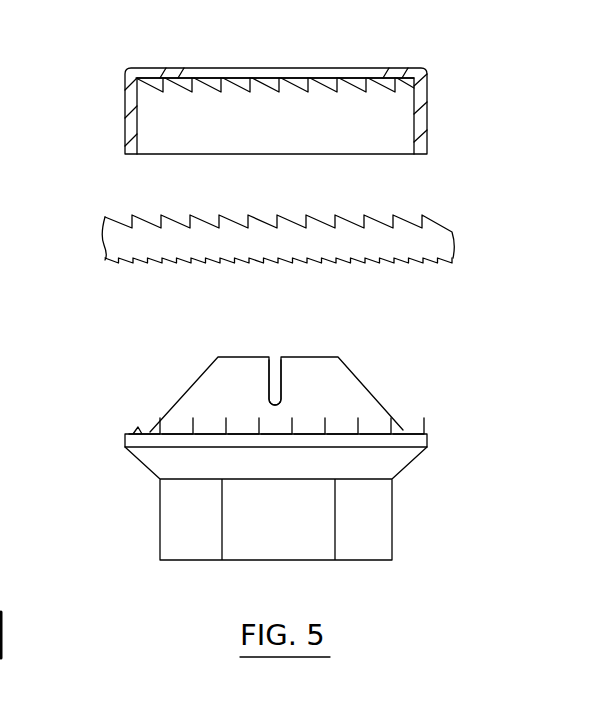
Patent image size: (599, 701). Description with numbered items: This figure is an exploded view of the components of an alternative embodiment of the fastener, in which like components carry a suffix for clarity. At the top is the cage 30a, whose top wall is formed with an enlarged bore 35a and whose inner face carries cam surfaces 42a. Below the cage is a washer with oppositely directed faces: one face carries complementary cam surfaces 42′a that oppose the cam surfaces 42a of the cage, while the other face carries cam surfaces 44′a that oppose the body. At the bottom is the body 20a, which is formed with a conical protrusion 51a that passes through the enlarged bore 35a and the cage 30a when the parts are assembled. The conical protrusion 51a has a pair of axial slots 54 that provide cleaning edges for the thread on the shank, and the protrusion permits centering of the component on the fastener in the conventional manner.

The cage 30a is at (125, 127).
The enlarged bore 35a is at (178, 67).
The cam surfaces 42a is at (262, 87).
The cam surfaces 42′a is at (118, 220).
The cam surfaces 44′a is at (115, 263).
The body 20a is at (380, 518).
The conical protrusion 51a is at (192, 380).
The axial slots 54 is at (269, 378).